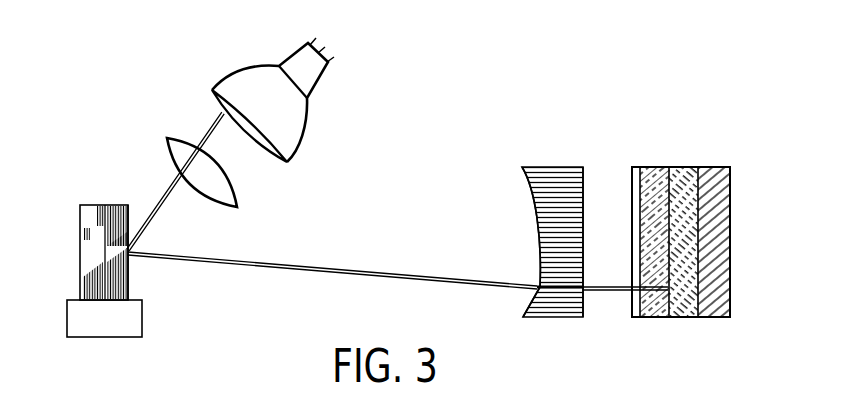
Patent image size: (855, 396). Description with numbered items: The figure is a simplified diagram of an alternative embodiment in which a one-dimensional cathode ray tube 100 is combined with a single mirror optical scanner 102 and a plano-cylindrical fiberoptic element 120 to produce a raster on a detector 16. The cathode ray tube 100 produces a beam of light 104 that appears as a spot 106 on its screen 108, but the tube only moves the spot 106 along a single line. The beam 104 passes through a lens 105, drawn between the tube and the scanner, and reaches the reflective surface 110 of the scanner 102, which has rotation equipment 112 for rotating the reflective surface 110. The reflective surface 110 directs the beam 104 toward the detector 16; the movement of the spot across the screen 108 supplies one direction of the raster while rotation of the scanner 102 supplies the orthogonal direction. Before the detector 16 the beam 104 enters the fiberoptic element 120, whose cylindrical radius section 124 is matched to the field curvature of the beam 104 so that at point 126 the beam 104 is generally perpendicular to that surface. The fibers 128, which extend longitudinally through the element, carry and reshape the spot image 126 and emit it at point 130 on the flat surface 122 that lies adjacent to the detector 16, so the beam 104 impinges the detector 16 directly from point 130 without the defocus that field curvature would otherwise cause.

The one-dimensional cathode ray tube 100 is at (250, 75).
The single mirror optical scanner 102 is at (78, 243).
The beam of light 104 is at (350, 268).
The condensing lens 105 is at (172, 160).
The spot 106 is at (222, 110).
The screen 108 is at (253, 135).
The reflective surface 110 is at (130, 267).
The rotation equipment 112 is at (128, 325).
The plano-cylindrical fiberoptic element 120 is at (552, 157).
The flat surface 122 is at (590, 167).
The cylindrical radius section 124 is at (530, 190).
The point (spot image) 126 is at (540, 287).
The fibers 128 is at (562, 290).
The point (emission point) 130 is at (588, 285).
The detector 16 is at (704, 153).